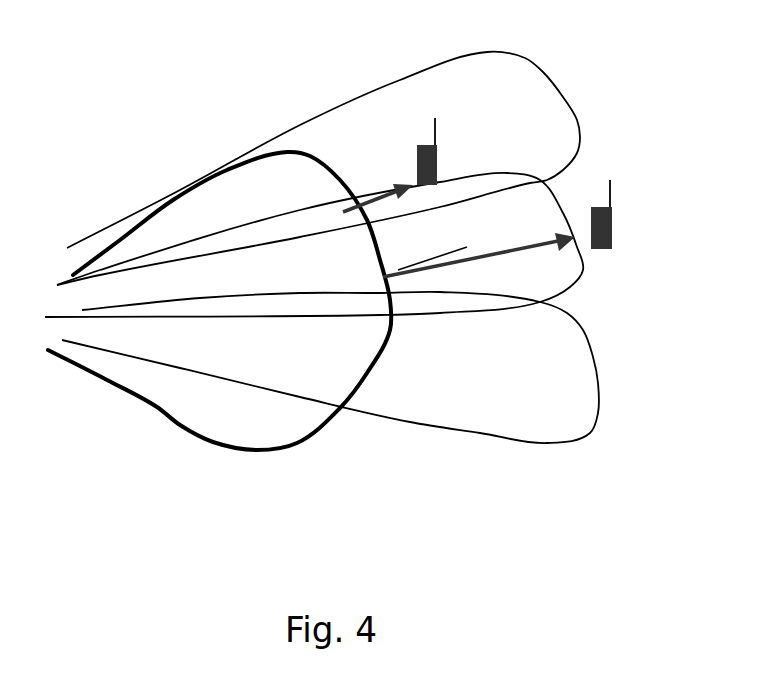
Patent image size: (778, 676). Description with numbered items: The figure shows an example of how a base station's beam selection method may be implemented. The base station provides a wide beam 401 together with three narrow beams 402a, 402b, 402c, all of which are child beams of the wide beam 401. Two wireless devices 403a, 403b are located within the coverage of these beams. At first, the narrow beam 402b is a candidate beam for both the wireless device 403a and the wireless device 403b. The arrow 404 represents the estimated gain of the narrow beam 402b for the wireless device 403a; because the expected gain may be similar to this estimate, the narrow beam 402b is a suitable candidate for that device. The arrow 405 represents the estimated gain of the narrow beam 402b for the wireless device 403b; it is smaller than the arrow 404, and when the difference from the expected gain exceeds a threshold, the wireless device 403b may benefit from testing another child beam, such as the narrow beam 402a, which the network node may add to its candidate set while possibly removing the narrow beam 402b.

The wide beam 401 is at (197, 433).
The narrow beam 402a is at (543, 72).
The narrow beam 402b is at (545, 185).
The narrow beam 402c is at (597, 377).
The wireless device 403a is at (605, 222).
The wireless device 403b is at (437, 152).
The arrow 404 is at (473, 257).
The arrow 405 is at (370, 193).